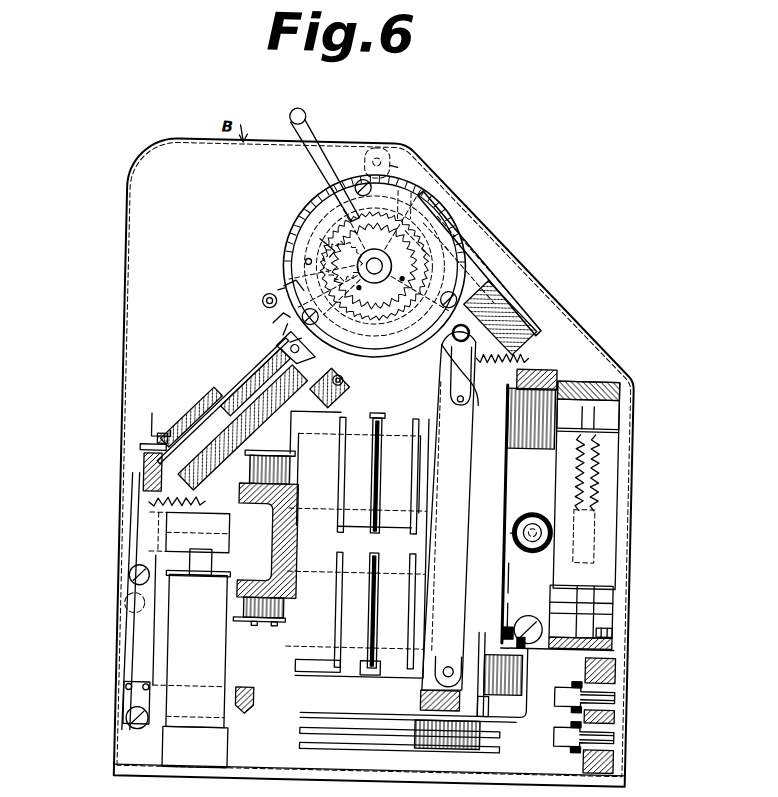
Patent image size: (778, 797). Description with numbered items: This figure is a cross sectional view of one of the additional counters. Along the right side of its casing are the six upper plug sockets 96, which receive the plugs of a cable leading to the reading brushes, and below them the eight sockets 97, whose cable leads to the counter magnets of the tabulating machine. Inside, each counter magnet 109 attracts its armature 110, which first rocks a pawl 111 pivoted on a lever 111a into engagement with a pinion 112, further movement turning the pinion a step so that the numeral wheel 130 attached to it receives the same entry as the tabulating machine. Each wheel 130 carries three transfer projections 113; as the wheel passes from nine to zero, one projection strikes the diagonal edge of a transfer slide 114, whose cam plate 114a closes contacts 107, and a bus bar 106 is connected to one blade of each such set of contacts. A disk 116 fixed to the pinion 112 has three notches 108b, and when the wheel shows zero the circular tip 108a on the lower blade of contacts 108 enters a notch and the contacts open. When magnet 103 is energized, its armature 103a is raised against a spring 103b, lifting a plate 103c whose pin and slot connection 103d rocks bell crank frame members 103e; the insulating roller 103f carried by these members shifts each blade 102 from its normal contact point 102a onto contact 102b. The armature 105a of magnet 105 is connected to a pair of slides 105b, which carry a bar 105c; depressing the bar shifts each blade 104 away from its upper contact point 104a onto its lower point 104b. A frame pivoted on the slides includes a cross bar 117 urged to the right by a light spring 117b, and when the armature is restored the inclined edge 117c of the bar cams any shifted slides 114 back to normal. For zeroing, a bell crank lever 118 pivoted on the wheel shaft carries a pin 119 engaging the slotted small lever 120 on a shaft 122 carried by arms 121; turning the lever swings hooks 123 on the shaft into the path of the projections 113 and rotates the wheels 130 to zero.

The upper plug sockets 96 is at (622, 695).
The sockets 97 is at (622, 731).
The blades 102 is at (508, 505).
The contact point 102a is at (533, 648).
The contact 102b is at (483, 636).
The magnet 103 is at (586, 528).
The armature 103a is at (523, 616).
The spring 103b is at (600, 461).
The plate 103c is at (616, 640).
The pin and slot connection 103d is at (618, 625).
The bell crank frame members 103e is at (524, 578).
The roller 103f is at (515, 531).
The blade 104 is at (334, 739).
The upper contact point 104a is at (400, 719).
The lower contact point 104b is at (262, 750).
The magnet 105 is at (219, 678).
The armature 105a is at (208, 522).
The slides 105b is at (146, 645).
The bar 105c is at (260, 706).
The bus bar 106 is at (166, 462).
The contacts 107 is at (248, 336).
The contacts 108 is at (462, 204).
The circular tip 108a is at (405, 220).
The notches 108b is at (320, 262).
The counter magnet 109 is at (393, 430).
The armature 110 is at (440, 598).
The pawl 111 is at (444, 373).
The lever 111a is at (471, 408).
The pinion 112 is at (288, 268).
The transfer projections 113 is at (458, 288).
The transfer slide 114 is at (240, 399).
The cam plate 114a is at (302, 366).
The disk 116 is at (315, 244).
The cross bar 117 is at (139, 481).
The light spring 117b is at (183, 508).
The inclined edge 117c is at (143, 476).
The lever 118 is at (298, 134).
The pin 119 is at (280, 288).
The small lever 120 is at (302, 262).
The arms 121 is at (391, 167).
The shaft 122 is at (384, 152).
The hooks 123 is at (277, 319).
The numeral wheels 130 is at (430, 208).